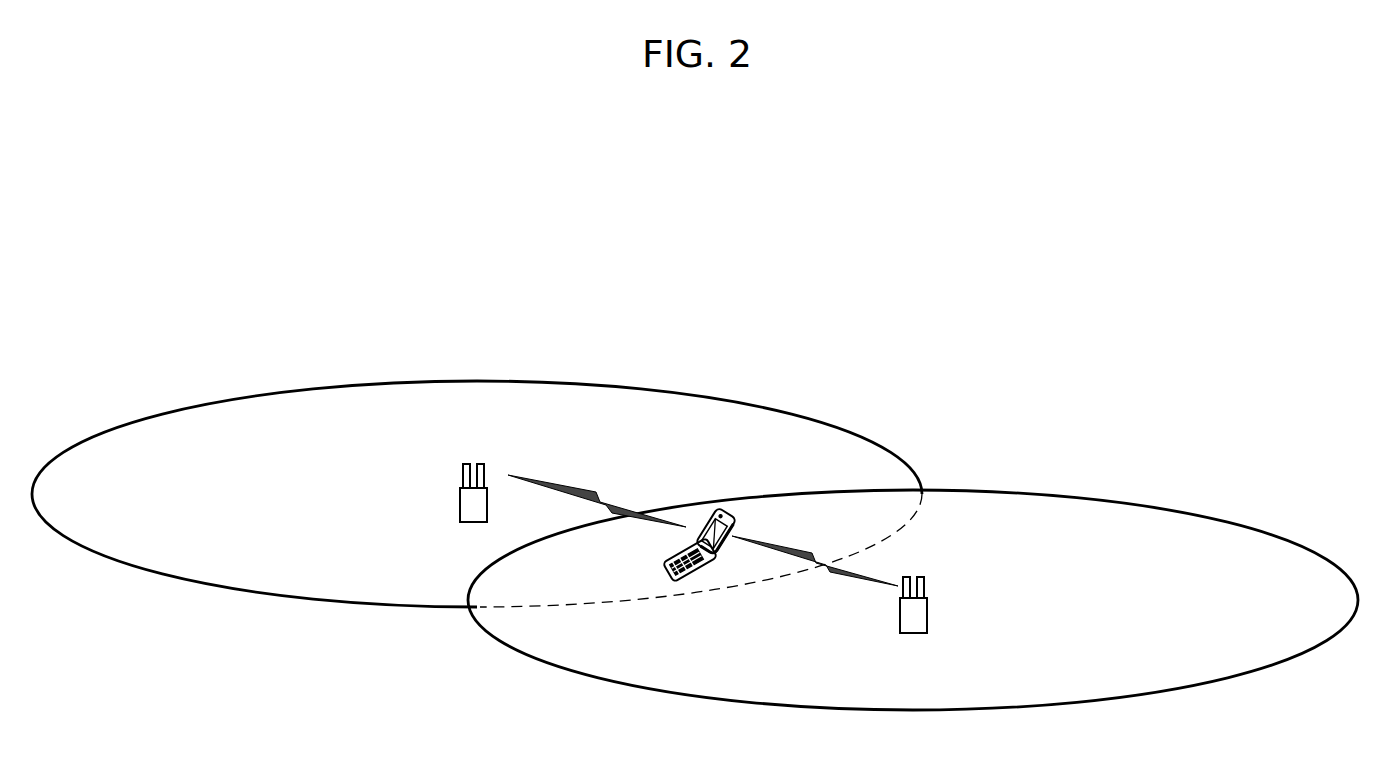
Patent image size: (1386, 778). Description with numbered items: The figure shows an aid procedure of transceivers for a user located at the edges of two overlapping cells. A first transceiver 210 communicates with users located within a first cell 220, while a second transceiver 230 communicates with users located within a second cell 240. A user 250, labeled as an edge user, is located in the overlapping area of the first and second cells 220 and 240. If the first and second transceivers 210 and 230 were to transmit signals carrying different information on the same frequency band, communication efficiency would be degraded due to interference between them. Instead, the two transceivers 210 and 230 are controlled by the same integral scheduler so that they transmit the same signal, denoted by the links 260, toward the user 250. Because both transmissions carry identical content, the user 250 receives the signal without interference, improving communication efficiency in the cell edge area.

The first transceiver 210 is at (465, 463).
The first cell 220 is at (197, 403).
The second transceiver 230 is at (921, 577).
The second cell 240 is at (1146, 498).
The user 250 is at (665, 572).
The same signal 260 is at (626, 494).